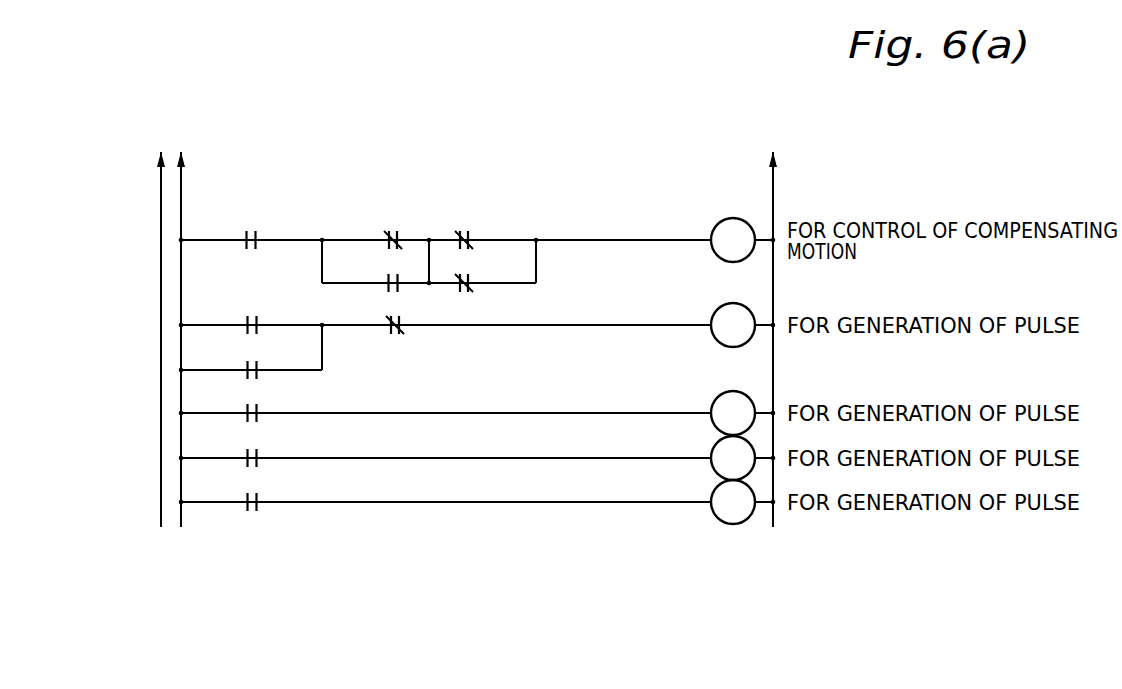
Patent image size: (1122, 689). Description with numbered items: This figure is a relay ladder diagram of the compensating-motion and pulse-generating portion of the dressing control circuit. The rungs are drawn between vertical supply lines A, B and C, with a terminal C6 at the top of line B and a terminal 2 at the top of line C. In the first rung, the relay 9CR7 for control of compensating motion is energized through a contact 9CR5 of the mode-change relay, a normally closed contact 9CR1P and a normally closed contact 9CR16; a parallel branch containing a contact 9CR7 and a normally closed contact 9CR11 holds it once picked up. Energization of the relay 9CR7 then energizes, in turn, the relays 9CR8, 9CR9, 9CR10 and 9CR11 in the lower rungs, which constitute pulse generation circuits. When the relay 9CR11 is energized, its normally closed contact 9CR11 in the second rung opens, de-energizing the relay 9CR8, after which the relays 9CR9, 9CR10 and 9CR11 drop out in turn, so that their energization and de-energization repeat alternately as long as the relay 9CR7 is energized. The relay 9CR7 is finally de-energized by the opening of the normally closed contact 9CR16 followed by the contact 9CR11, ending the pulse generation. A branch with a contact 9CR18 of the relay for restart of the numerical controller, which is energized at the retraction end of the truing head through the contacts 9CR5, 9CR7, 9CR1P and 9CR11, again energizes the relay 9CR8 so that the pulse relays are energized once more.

The bus line A is at (157, 353).
The bus line B is at (181, 353).
The bus line C is at (773, 353).
The terminal C6 is at (186, 138).
The terminal 2 is at (773, 136).
The relay for the change of mode 9CR5 is at (247, 227).
The relay contact 9CR1P is at (391, 227).
The normally closed contact 9CR16 is at (465, 227).
The relay for control of compensating motion 9CR7 is at (488, 276).
The relay for generation of pulse 9CR11 is at (559, 386).
The relay for restart of the numerical controller 9CR18 is at (253, 358).
The relay for generation of pulse 9CR8 is at (489, 362).
The relay for generation of pulse 9CR9 is at (489, 429).
The relay for generation of pulse 9CR10 is at (489, 473).